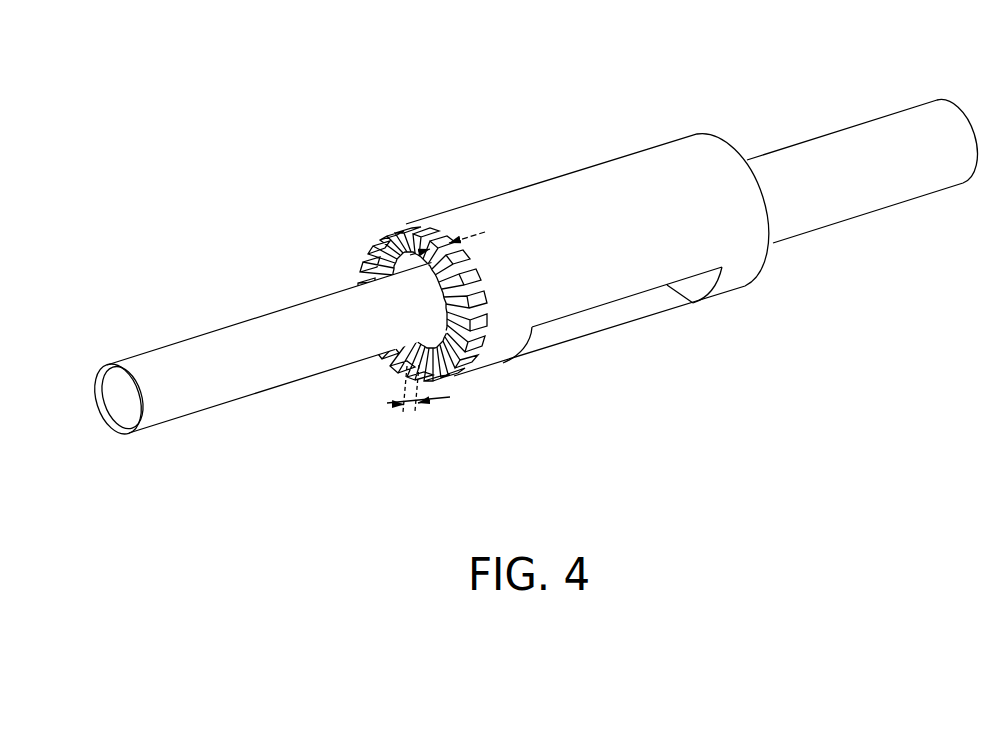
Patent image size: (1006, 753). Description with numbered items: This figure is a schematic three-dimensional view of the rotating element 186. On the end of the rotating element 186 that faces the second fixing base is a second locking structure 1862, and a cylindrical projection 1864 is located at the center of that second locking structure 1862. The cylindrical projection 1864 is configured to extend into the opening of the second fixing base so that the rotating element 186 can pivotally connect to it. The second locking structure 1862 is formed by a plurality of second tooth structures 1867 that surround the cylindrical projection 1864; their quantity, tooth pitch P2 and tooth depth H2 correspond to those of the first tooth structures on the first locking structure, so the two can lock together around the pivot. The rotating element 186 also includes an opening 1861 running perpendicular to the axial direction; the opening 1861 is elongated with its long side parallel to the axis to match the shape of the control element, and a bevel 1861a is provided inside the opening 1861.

The rotating element 186 is at (543, 123).
The opening 1861 is at (601, 326).
The bevel 1861a is at (697, 284).
The second locking structure 1862 is at (355, 240).
The second tooth structures 1867 is at (448, 373).
The cylindrical projection 1864 is at (267, 372).
The tooth depth H2 is at (452, 242).
The tooth pitch P2 is at (378, 393).